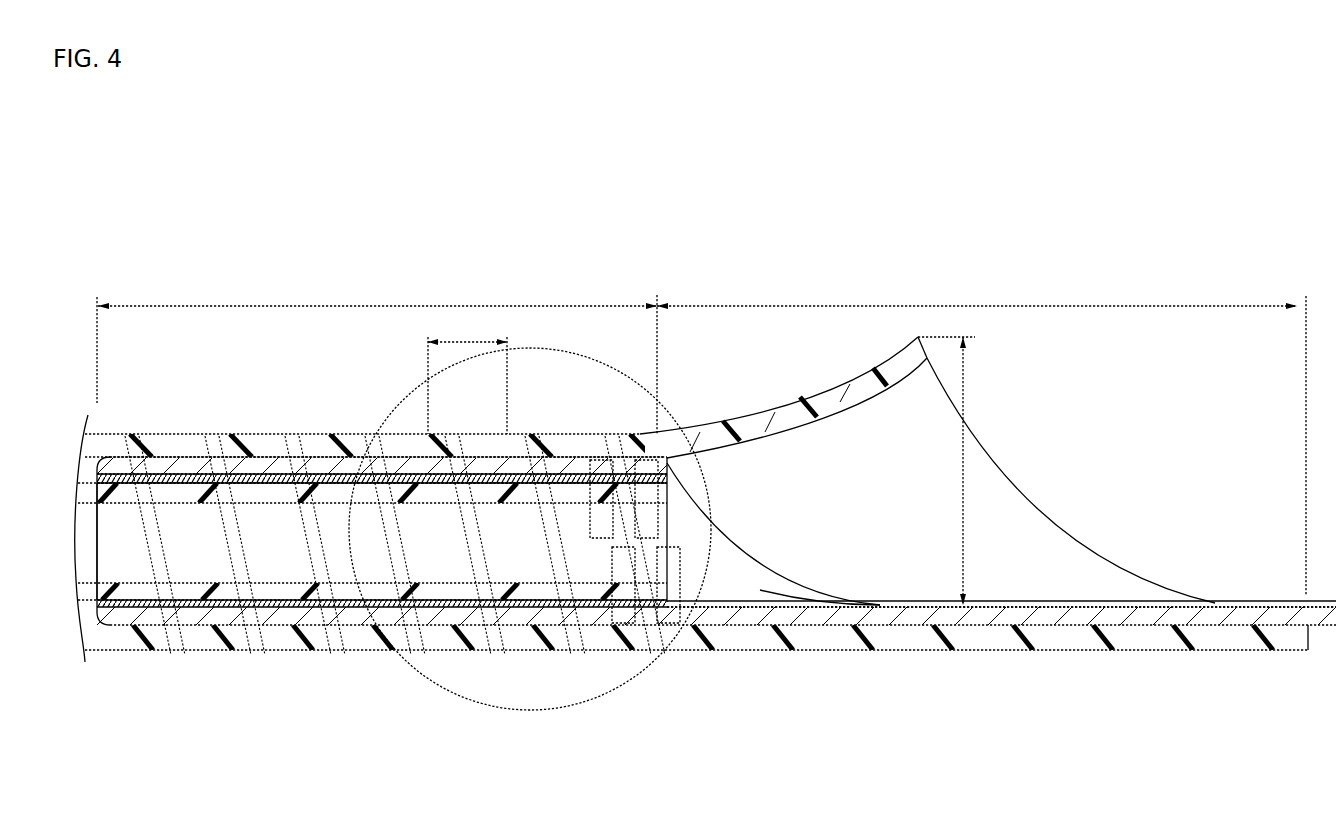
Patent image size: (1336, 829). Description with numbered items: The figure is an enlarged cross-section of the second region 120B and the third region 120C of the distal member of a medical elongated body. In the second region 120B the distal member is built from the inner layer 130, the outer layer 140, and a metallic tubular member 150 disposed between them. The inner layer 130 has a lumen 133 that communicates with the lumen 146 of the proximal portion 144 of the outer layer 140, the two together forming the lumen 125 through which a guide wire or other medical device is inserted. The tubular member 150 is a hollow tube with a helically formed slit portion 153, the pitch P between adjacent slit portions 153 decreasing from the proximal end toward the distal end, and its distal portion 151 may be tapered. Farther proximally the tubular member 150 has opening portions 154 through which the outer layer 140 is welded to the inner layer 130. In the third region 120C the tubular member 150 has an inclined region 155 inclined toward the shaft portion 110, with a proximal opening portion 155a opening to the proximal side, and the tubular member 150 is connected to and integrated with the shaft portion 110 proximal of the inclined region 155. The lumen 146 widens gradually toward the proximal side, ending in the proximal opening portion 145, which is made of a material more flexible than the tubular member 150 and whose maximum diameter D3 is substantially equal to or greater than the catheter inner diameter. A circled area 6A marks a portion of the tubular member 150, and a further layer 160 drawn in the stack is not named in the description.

The shaft portion 110 is at (820, 617).
The second region 120B is at (377, 351).
The third region 120C is at (981, 430).
The lumen 125 is at (716, 555).
The inner layer 130 is at (188, 592).
The lumen of inner layer 133 is at (196, 476).
The outer layer 140 is at (363, 635).
The proximal portion of outer layer 144 is at (893, 357).
The proximal opening portion 145 is at (1092, 552).
The lumen of proximal portion 146 is at (910, 603).
The tubular member 150 is at (290, 620).
The distal portion of tubular member 151 is at (97, 635).
The slit portion 153 is at (447, 598).
The opening portions 154 is at (583, 526).
The inclined region 155 is at (708, 602).
The proximal opening portion of inclined region 155a is at (787, 602).
The protective layer 160 is at (232, 628).
The enlarged region 6A is at (525, 712).
The pitch P is at (467, 372).
The maximum diameter of proximal opening portion D3 is at (959, 471).